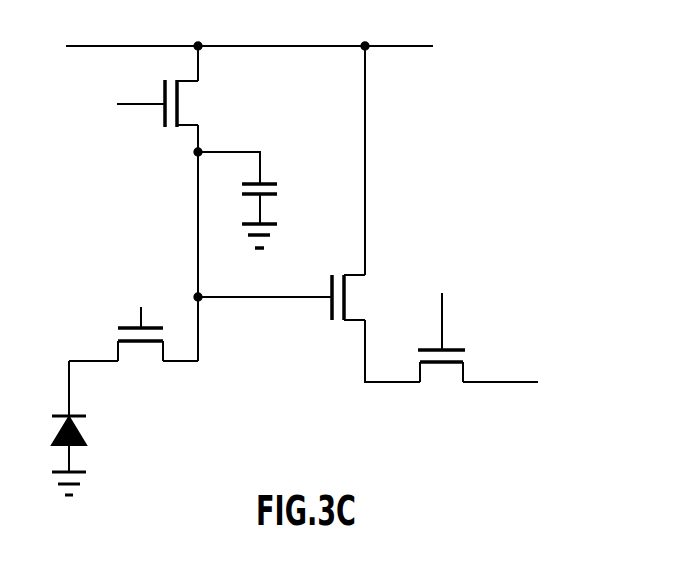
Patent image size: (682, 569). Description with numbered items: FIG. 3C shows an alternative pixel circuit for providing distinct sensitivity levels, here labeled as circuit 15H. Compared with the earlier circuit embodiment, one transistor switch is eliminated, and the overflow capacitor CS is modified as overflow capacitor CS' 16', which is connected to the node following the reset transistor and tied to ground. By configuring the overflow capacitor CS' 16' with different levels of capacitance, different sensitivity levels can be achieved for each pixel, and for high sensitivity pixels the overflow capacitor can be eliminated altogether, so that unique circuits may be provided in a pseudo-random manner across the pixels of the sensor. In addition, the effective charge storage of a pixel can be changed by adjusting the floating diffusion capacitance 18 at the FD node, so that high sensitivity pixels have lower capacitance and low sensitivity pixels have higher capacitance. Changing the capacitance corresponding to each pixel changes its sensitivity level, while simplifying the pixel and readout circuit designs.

The pixel circuit 15H is at (329, 268).
The overflow capacitor CS' 16' is at (272, 169).
The floating diffusion capacitance 18 is at (246, 351).